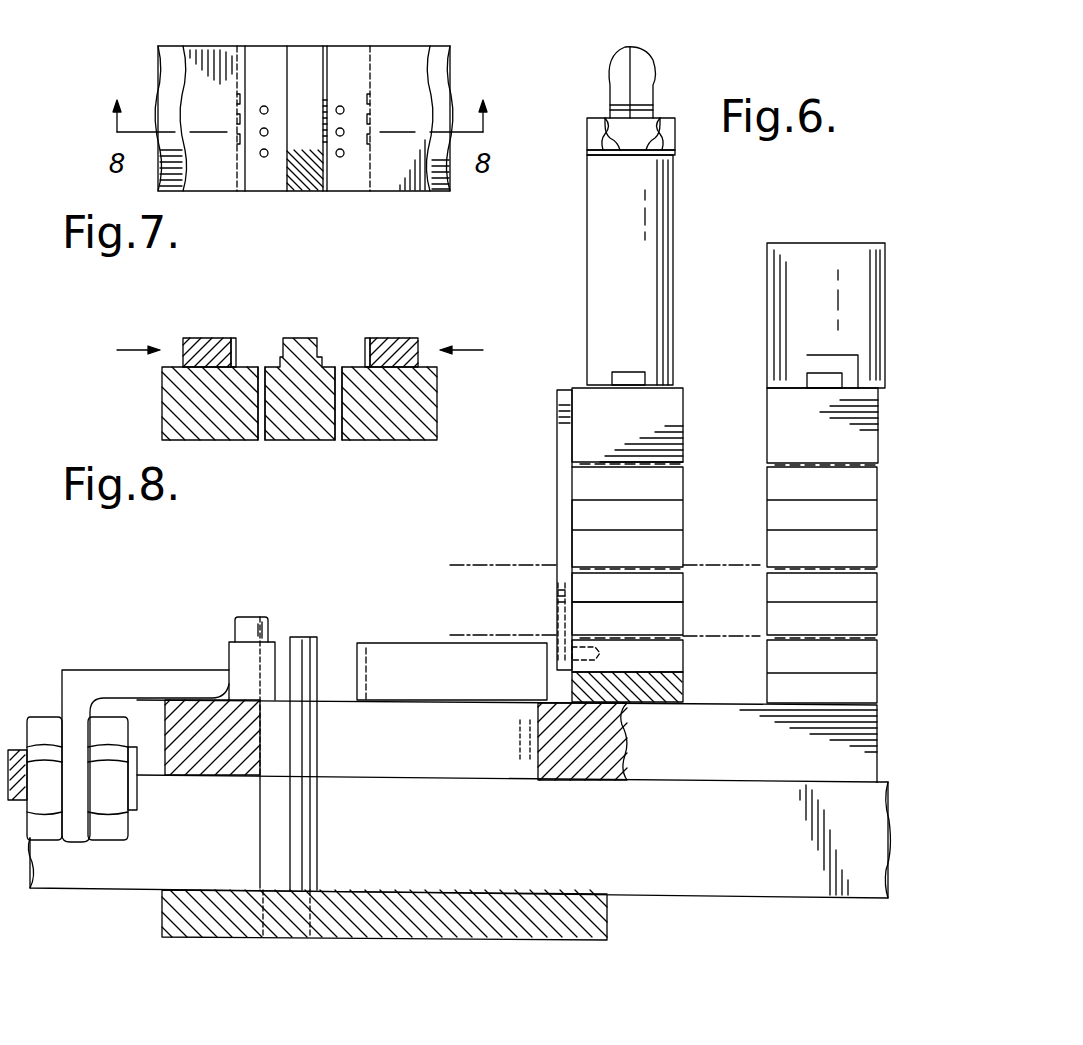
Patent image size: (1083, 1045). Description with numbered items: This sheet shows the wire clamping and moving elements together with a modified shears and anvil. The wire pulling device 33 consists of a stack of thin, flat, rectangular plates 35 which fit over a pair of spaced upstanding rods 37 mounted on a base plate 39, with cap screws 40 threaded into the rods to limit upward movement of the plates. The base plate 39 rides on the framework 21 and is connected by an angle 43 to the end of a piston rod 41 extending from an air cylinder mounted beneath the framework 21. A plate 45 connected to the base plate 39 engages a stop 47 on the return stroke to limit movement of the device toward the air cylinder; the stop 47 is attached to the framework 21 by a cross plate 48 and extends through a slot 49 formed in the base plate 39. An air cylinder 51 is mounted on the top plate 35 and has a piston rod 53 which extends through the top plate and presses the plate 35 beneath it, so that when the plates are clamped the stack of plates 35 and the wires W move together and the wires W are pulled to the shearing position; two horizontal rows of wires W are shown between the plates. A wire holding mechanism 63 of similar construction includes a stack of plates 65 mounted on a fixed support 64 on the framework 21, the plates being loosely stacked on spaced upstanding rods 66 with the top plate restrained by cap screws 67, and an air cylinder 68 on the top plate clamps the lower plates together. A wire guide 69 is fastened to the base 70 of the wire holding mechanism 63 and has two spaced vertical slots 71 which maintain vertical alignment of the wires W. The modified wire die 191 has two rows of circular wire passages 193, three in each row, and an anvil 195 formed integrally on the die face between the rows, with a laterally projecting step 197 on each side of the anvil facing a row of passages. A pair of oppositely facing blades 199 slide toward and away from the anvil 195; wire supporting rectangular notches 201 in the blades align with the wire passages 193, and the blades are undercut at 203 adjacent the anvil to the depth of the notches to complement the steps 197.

In FIG. 6, the framework 21 is at (730, 905).
In FIG. 6, the wire pulling device 33 is at (768, 430).
In FIG. 6, the plates 35 is at (775, 548).
In FIG. 6, the upstanding rods 37 is at (830, 568).
In FIG. 6, the base plate 39 is at (782, 767).
In FIG. 6, the cap screws 40 is at (827, 372).
In FIG. 6, the piston rod 41 is at (138, 800).
In FIG. 6, the angle 43 is at (125, 668).
In FIG. 6, the plate 45 is at (383, 645).
In FIG. 6, the stop 47 is at (287, 640).
In FIG. 6, the cross plate 48 is at (585, 930).
In FIG. 6, the slot 49 is at (455, 780).
In FIG. 6, the air cylinder 51 is at (832, 246).
In FIG. 6, the piston rod 53 is at (800, 462).
In FIG. 6, the wire holding mechanism 63 is at (550, 435).
In FIG. 6, the fixed support 64 is at (648, 703).
In FIG. 6, the plates 65 is at (578, 545).
In FIG. 6, the upstanding rods 66 is at (630, 568).
In FIG. 6, the cap screws 67 is at (643, 372).
In FIG. 6, the air cylinder 68 is at (597, 222).
In FIG. 6, the wire guide 69 is at (556, 449).
In FIG. 6, the base 70 is at (672, 660).
In FIG. 6, the vertical slots 71 is at (560, 630).
In FIG. 6, the wires W is at (468, 570).
In FIG. 7, the wire die 191 is at (452, 70).
In FIG. 8, the wire die 191 is at (398, 432).
In FIG. 7, the wire passages 193 is at (341, 110).
In FIG. 8, the wire passages 193 is at (338, 442).
In FIG. 7, the anvil 195 is at (306, 192).
In FIG. 8, the anvil 195 is at (302, 340).
In FIG. 7, the step 197 is at (287, 60).
In FIG. 8, the step 197 is at (283, 340).
In FIG. 7, the blades 199 is at (212, 45).
In FIG. 8, the blades 199 is at (172, 366).
In FIG. 7, the notches 201 is at (240, 100).
In FIG. 8, the notches 201 is at (235, 338).
In FIG. 7, the undercut 203 is at (362, 195).
In FIG. 8, the undercut 203 is at (240, 338).